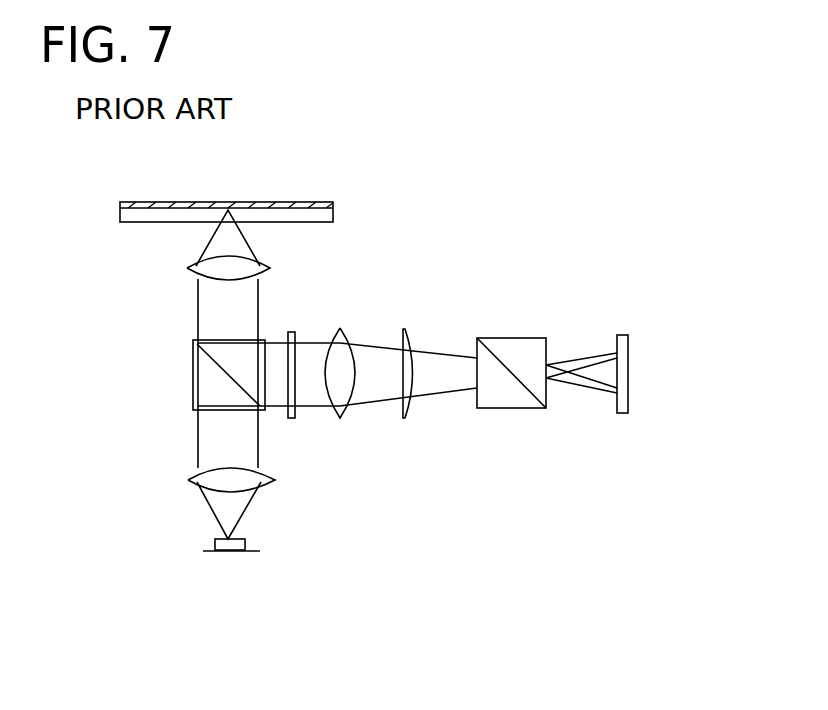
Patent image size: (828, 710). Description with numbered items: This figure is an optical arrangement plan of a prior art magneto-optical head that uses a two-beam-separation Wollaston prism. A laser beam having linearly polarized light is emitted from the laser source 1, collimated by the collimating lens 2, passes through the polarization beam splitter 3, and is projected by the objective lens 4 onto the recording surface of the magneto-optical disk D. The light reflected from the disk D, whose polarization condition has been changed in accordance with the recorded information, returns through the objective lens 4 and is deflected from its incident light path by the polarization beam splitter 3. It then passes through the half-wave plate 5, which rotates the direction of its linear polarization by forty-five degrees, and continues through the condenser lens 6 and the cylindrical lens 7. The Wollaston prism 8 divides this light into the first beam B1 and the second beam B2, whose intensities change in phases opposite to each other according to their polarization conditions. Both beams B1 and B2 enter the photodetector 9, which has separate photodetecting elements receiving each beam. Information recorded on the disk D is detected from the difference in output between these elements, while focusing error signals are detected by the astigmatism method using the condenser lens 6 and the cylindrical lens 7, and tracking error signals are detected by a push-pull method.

The light source 1 is at (215, 545).
The collimating lens 2 is at (190, 482).
The polarization beam splitter 3 is at (193, 365).
The objective lens 4 is at (190, 268).
The half-wave plate 5 is at (292, 332).
The condenser lens 6 is at (340, 353).
The cylindrical lens 7 is at (416, 355).
The Wollaston prism 8 is at (500, 343).
The photodetector 9 is at (628, 342).
The magneto-optical disk D is at (294, 202).
The first beam B1 is at (587, 356).
The second beam B2 is at (587, 392).